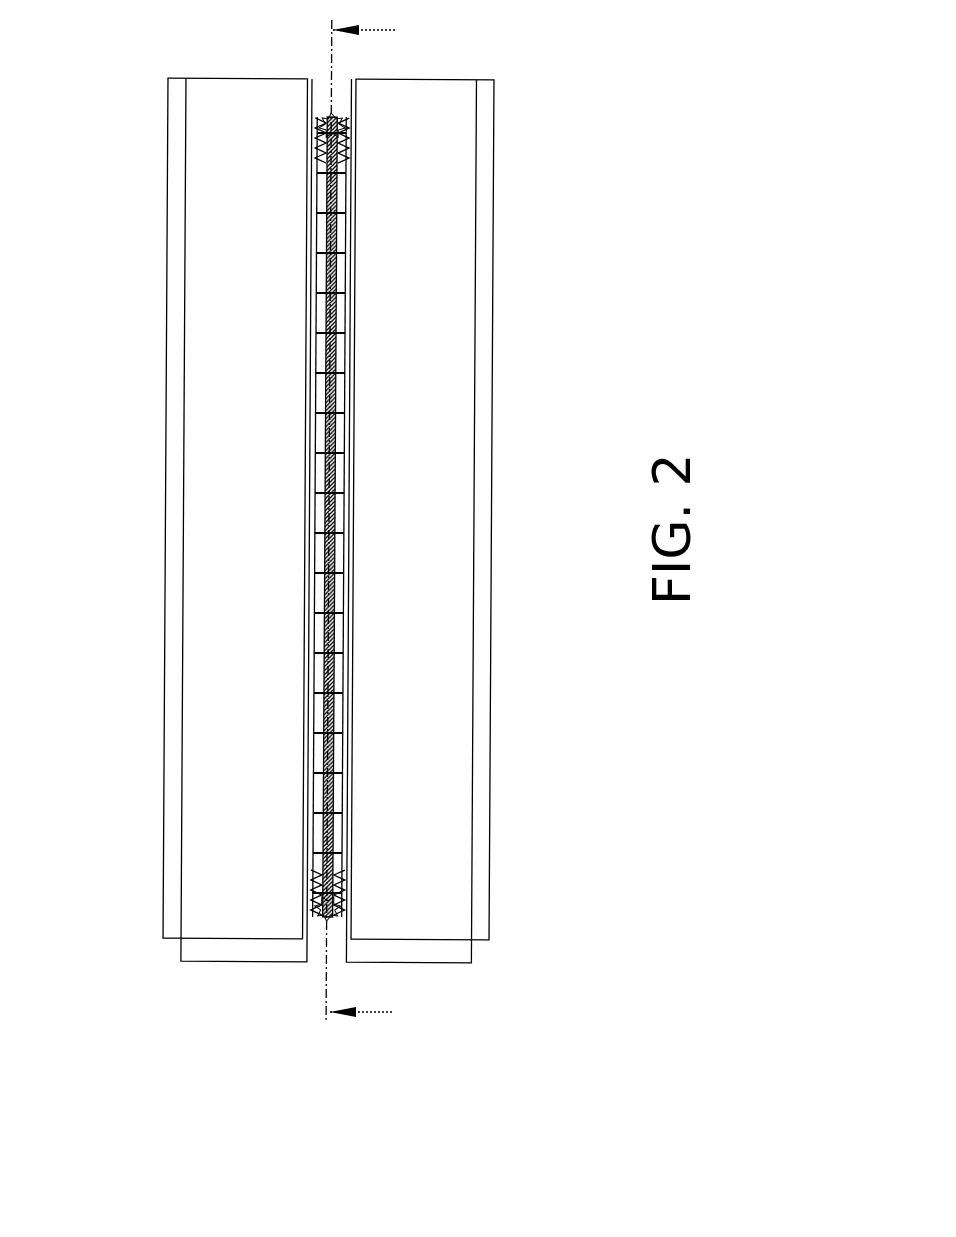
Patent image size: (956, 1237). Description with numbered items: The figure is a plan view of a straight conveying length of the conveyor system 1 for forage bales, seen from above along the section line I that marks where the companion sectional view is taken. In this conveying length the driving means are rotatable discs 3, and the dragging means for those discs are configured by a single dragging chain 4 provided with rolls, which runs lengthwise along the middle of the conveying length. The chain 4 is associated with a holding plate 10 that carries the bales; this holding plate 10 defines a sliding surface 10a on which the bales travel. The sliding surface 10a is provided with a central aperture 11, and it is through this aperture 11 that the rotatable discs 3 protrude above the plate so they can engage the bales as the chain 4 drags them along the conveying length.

The conveyor system 1 is at (304, 519).
The holding plate 10 is at (322, 520).
The sliding surface 10a is at (235, 685).
The dragging chain 4 is at (307, 507).
The aperture 11 is at (320, 100).
The rotatable discs 3 is at (303, 938).
The section line I- I is at (363, 519).